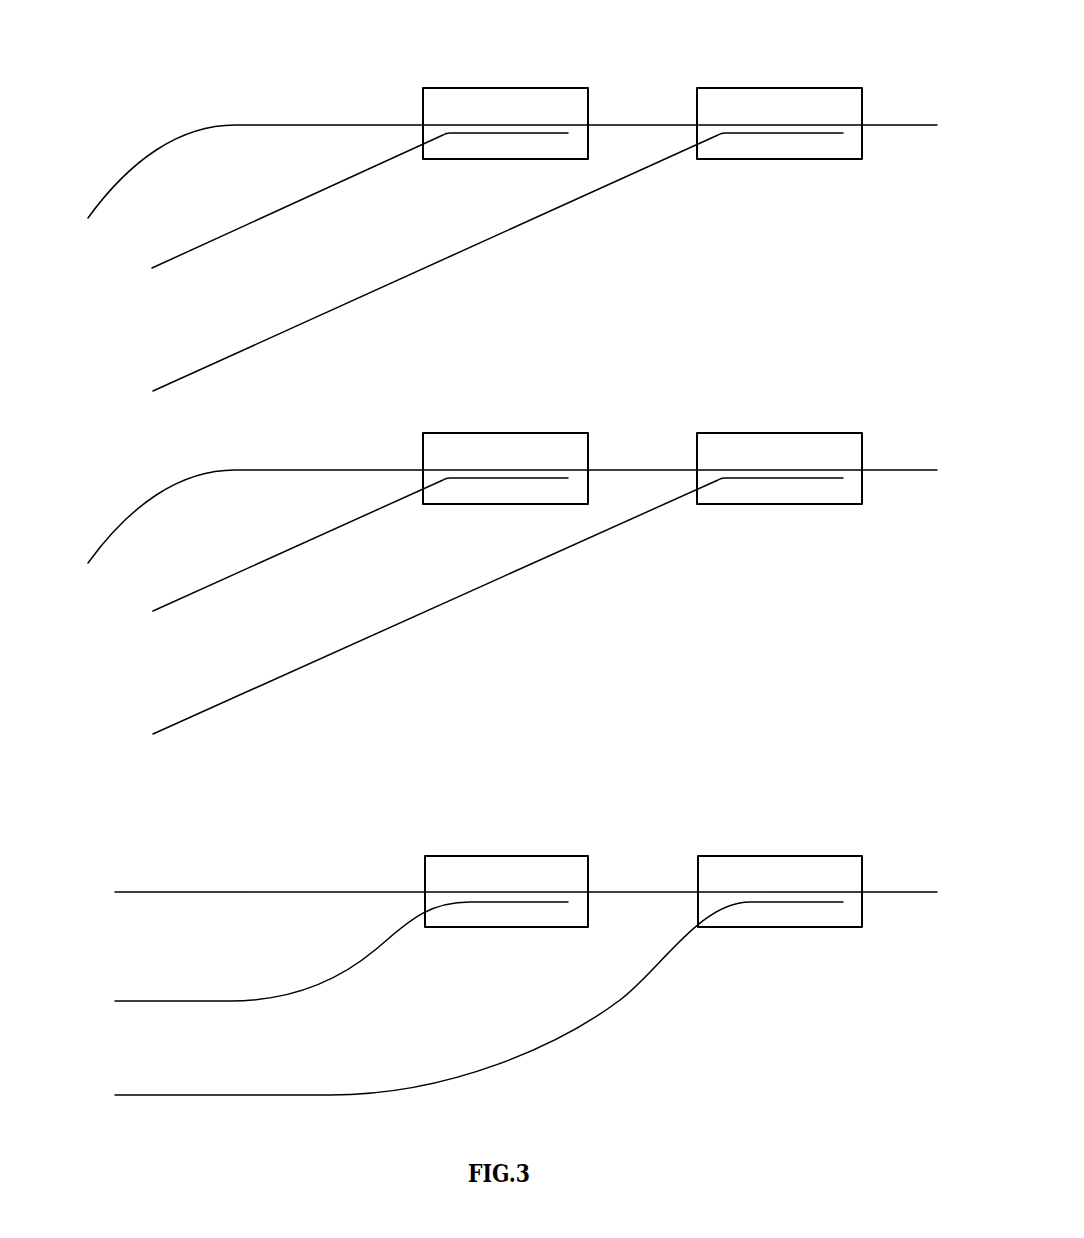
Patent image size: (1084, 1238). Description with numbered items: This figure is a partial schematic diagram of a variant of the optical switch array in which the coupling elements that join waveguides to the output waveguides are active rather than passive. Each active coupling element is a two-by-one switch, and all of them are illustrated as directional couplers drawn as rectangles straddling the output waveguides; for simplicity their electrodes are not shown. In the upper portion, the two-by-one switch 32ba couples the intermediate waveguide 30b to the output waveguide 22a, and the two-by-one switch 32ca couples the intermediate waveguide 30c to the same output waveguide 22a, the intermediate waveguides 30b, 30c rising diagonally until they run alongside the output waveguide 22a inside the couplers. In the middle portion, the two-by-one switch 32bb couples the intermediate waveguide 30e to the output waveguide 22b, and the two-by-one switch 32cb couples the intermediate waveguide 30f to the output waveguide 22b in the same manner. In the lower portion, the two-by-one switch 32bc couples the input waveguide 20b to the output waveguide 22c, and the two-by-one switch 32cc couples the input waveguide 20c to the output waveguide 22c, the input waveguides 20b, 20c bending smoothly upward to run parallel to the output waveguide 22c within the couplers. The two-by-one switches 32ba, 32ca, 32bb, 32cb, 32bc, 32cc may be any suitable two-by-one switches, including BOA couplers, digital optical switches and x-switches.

The output waveguide 22a is at (262, 123).
The output waveguide 22b is at (262, 468).
The output waveguide 22c is at (262, 890).
The intermediate waveguide 30b is at (262, 218).
The intermediate waveguide 30c is at (262, 342).
The intermediate waveguide 30e is at (262, 562).
The intermediate waveguide 30f is at (262, 685).
The input waveguide 20b is at (262, 999).
The input waveguide 20c is at (262, 1093).
The 2x1 switch 32ba is at (510, 87).
The 2x1 switch 32ca is at (785, 87).
The 2x1 switch 32bb is at (510, 432).
The 2x1 switch 32cb is at (785, 432).
The 2x1 switch 32bc is at (512, 855).
The 2x1 switch 32cc is at (785, 855).